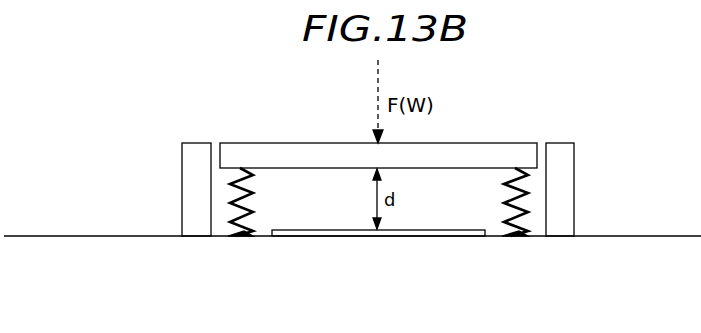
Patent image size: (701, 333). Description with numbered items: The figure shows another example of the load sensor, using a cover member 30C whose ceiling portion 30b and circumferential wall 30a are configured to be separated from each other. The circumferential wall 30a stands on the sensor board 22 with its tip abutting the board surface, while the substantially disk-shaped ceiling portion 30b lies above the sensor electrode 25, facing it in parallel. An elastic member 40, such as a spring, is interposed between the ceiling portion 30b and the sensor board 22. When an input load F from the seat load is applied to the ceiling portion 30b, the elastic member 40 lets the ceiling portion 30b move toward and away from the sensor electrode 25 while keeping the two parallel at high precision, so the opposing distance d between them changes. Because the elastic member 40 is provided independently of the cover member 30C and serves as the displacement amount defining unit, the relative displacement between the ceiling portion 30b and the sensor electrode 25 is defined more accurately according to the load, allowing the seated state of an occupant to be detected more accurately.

The sensor board 22 is at (72, 236).
The cover member 30C is at (318, 147).
The circumferential wall 30a is at (181, 193).
The ceiling portion 30b is at (305, 148).
The elastic member 40 is at (240, 229).
The sensor electrode 25 is at (414, 236).